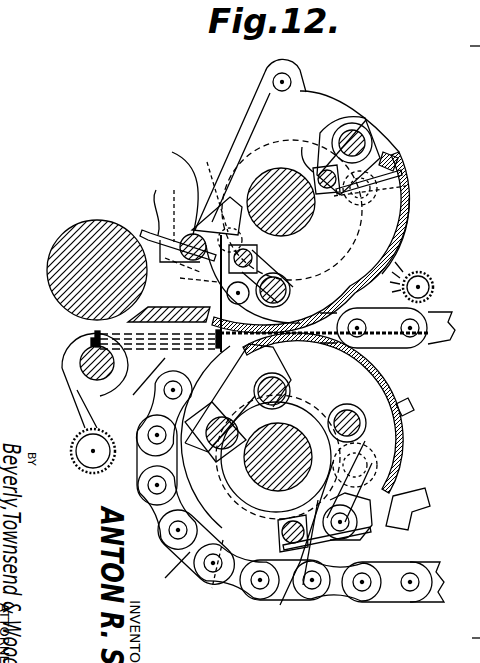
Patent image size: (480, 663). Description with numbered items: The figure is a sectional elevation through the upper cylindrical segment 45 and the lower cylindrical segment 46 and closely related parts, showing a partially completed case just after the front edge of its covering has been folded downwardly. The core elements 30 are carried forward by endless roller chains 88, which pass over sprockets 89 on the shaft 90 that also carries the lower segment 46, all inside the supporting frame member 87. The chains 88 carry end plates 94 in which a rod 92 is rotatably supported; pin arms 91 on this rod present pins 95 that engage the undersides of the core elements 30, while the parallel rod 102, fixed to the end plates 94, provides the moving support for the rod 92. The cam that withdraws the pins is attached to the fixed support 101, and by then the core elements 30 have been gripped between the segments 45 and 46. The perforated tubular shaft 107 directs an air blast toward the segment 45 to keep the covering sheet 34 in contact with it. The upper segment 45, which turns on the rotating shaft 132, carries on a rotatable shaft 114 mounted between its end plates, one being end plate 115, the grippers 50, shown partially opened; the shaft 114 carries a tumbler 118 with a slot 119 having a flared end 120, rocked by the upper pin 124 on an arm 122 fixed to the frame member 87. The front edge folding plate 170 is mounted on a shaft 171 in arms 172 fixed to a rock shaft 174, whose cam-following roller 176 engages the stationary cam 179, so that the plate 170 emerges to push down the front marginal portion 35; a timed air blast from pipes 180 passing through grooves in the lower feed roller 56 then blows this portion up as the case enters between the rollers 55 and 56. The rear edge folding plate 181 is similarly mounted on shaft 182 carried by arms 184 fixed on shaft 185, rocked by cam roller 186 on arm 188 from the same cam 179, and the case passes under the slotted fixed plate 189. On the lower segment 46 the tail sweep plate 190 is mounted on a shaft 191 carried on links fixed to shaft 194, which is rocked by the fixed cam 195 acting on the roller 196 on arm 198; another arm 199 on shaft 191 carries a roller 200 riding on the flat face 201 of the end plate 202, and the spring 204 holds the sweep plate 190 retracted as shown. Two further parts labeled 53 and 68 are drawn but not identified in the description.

The core element 30 is at (390, 348).
The covering sheet 34 is at (410, 205).
The front marginal portion 35 is at (222, 344).
The upper cylindrical segment 45 is at (405, 238).
The lower cylindrical segment 46 is at (400, 405).
The grippers 50 is at (148, 231).
The chain 53 is at (471, 332).
The roller 55 is at (48, 266).
The lower feed roller 56 is at (62, 353).
The roller 68 is at (102, 472).
The supporting frame member 87 is at (463, 44).
The endless roller chain 88 is at (380, 600).
The sprocket 89 is at (414, 436).
The shaft 90 is at (250, 492).
The pin arm 91 is at (241, 383).
The rod 92 is at (215, 462).
The end plate 94 is at (136, 389).
The pin 95 is at (232, 304).
The fixed support 101 is at (463, 636).
The rod 102 is at (288, 386).
The tubular shaft 107 is at (427, 285).
The rotatable shaft 114 is at (172, 185).
The end plate 115 is at (326, 98).
The tumbler 118 is at (175, 213).
The slot 119 is at (182, 210).
The flared end 120 is at (215, 201).
The arm 122 is at (256, 96).
The upper pin 124 is at (293, 78).
The rotating shaft 132 is at (316, 230).
The front edge folding plate 170 is at (186, 318).
The shaft 171 is at (257, 260).
The arm 172 is at (272, 275).
The rock shaft 174 is at (290, 294).
The cam-following roller 176 is at (183, 276).
The stationary cam 179 is at (338, 223).
The pipe 180 is at (80, 411).
The rear edge folding plate 181 is at (403, 179).
The shaft 182 is at (299, 154).
The arm 184 is at (340, 153).
The shaft 185 is at (356, 140).
The cam roller 186 is at (411, 187).
The arm 188 is at (395, 152).
The fixed plate 189 is at (158, 333).
The tail sweep plate 190 is at (388, 521).
The shaft 191 is at (279, 535).
The shaft 194 is at (340, 418).
The fixed cam 195 is at (208, 583).
The roller 196 is at (406, 474).
The arm 198 is at (412, 452).
The arm 199 is at (280, 606).
The roller 200 is at (340, 585).
The flat face 201 is at (428, 505).
The end plate 202 is at (170, 573).
The spring 204 is at (373, 540).